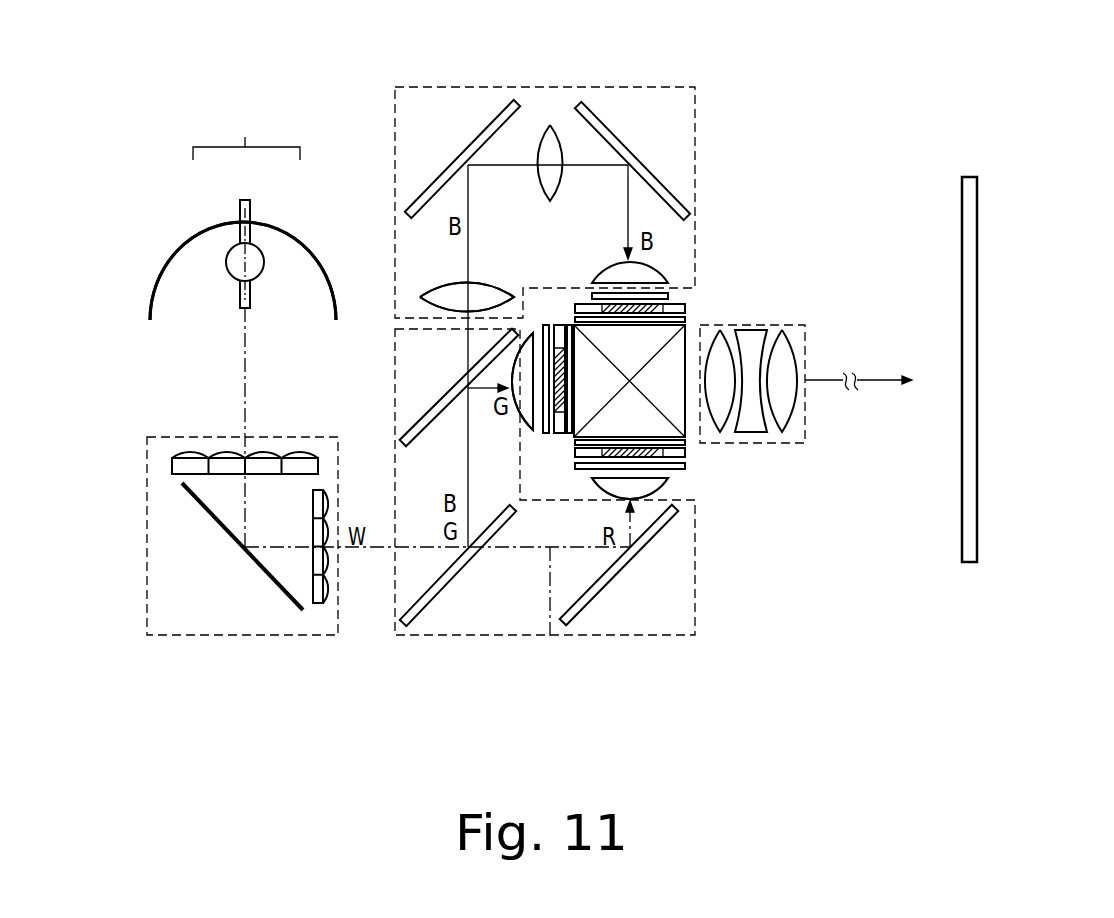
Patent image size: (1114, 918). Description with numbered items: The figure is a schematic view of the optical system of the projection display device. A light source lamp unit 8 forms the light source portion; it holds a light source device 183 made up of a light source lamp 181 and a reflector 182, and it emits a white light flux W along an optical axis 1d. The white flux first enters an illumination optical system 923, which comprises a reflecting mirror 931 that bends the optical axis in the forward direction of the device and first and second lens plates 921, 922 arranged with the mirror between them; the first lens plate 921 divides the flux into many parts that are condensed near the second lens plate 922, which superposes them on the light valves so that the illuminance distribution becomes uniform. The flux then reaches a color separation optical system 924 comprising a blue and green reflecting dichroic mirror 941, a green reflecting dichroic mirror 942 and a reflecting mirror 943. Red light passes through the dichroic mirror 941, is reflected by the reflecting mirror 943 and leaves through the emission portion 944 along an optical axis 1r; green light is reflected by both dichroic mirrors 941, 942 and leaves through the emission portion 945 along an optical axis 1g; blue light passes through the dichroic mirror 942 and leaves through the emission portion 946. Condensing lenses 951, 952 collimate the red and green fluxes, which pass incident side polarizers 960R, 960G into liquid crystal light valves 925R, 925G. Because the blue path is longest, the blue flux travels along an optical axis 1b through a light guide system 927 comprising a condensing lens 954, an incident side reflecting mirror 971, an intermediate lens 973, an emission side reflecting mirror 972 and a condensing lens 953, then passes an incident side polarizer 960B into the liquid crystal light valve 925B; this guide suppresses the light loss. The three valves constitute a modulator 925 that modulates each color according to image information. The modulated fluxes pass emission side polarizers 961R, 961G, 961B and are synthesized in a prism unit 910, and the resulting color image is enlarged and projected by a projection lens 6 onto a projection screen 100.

The light source lamp unit 8 is at (178, 250).
The light source lamp 181 is at (234, 251).
The reflector 182 is at (272, 229).
The light source device 183 is at (246, 130).
The system optical axis 1d is at (245, 373).
The first lens plate 921 is at (172, 466).
The second lens plate 922 is at (320, 604).
The illumination optical system 923 is at (147, 596).
The reflecting mirror 931 is at (205, 507).
The light guide system 927 is at (408, 80).
The incident side reflecting mirror 971 is at (440, 182).
The emission side reflecting mirror 972 is at (647, 163).
The intermediate lens 973 is at (550, 125).
The optical axis of the blue light flux 1b is at (522, 165).
The condensing lens 954 is at (445, 288).
The emission portion of the blue light flux 946 is at (452, 312).
The color separation optical system 924 is at (697, 622).
The blue and green reflecting dichroic mirror 941 is at (413, 622).
The green reflecting dichroic mirror 942 is at (415, 430).
The reflecting mirror 943 is at (668, 665).
The emission portion of the red light flux 944 is at (672, 478).
The emission portion of the green light flux 945 is at (518, 430).
The condensing lens 951 is at (672, 488).
The condensing lens 952 is at (540, 323).
The condensing lens 953 is at (668, 268).
The optical axis of the green light flux 1g is at (488, 416).
The optical axis of the red light flux 1r is at (598, 672).
The modulator 925 is at (622, 432).
The prism unit 910 is at (686, 323).
The liquid crystal light valve 925B is at (685, 307).
The liquid crystal light valve 925G is at (560, 323).
The liquid crystal light valve 925R is at (686, 452).
The incident side polarizer 960B is at (668, 296).
The incident side polarizer 960G is at (521, 445).
The incident side polarizer 960R is at (686, 466).
The emission side polarizer 961B is at (686, 319).
The emission side polarizer 961G is at (546, 435).
The emission side polarizer 961R is at (686, 443).
The projection lens 6 is at (806, 360).
The projection screen 100 is at (977, 222).